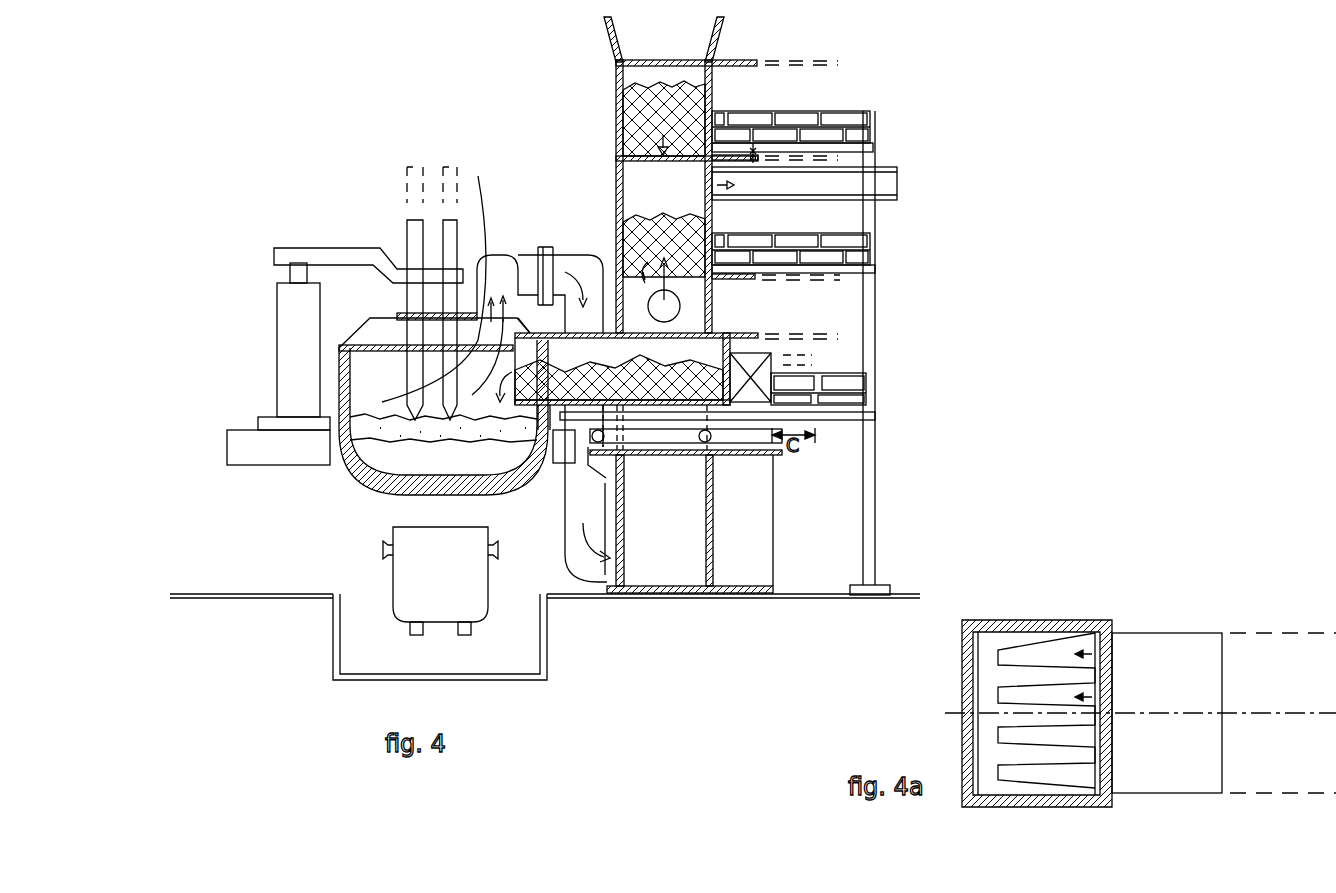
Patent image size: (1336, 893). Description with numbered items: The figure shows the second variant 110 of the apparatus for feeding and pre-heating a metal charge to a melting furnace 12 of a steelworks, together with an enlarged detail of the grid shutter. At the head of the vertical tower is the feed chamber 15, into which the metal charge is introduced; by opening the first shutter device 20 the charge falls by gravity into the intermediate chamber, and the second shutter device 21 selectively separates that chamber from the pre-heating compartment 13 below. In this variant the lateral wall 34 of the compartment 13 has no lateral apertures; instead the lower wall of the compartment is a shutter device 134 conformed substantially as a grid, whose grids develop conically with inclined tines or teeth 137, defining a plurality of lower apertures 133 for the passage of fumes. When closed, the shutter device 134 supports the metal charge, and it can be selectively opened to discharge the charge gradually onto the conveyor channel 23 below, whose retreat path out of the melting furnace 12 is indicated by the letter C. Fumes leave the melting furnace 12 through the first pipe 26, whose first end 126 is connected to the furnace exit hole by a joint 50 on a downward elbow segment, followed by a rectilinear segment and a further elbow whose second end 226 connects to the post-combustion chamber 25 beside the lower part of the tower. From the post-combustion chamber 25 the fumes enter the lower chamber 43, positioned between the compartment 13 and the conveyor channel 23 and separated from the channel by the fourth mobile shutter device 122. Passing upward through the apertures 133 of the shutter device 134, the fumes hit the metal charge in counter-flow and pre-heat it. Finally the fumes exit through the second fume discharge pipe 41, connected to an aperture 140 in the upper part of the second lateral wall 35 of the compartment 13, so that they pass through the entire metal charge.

In FIG. 4, the second variant 110 is at (391, 130).
In FIG. 4, the melting furnace 12 is at (343, 495).
In FIG. 4, the first end 126 is at (444, 287).
In FIG. 4, the joint 50 is at (538, 250).
In FIG. 4, the lower apertures 133 is at (617, 293).
In FIG. 4A, the lower apertures 133 is at (1085, 696).
In FIG. 4, the pre-heating compartment 13 is at (625, 193).
In FIG. 4, the feed chamber 15 is at (620, 35).
In FIG. 4, the first shutter device 20 is at (617, 68).
In FIG. 4, the second shutter device 21 is at (618, 153).
In FIG. 4, the lateral wall 34 is at (618, 177).
In FIG. 4, the lower chamber 43 is at (712, 306).
In FIG. 4, the fourth mobile shutter device 122 is at (750, 333).
In FIG. 4, the conveyor channel 23 is at (657, 407).
In FIG. 4, the post-combustion chamber 25 is at (722, 535).
In FIG. 4, the second end 226 is at (618, 592).
In FIG. 4, the first pipe 26 is at (578, 561).
In FIG. 4, the second lateral wall 35 is at (730, 242).
In FIG. 4, the second fume discharge pipe 41 is at (870, 178).
In FIG. 4, the aperture 140 is at (713, 198).
In FIG. 4, the shutter device 134 is at (740, 278).
In FIG. 4A, the shutter device 134 is at (1000, 632).
In FIG. 4A, the tines or teeth 137 is at (1050, 676).